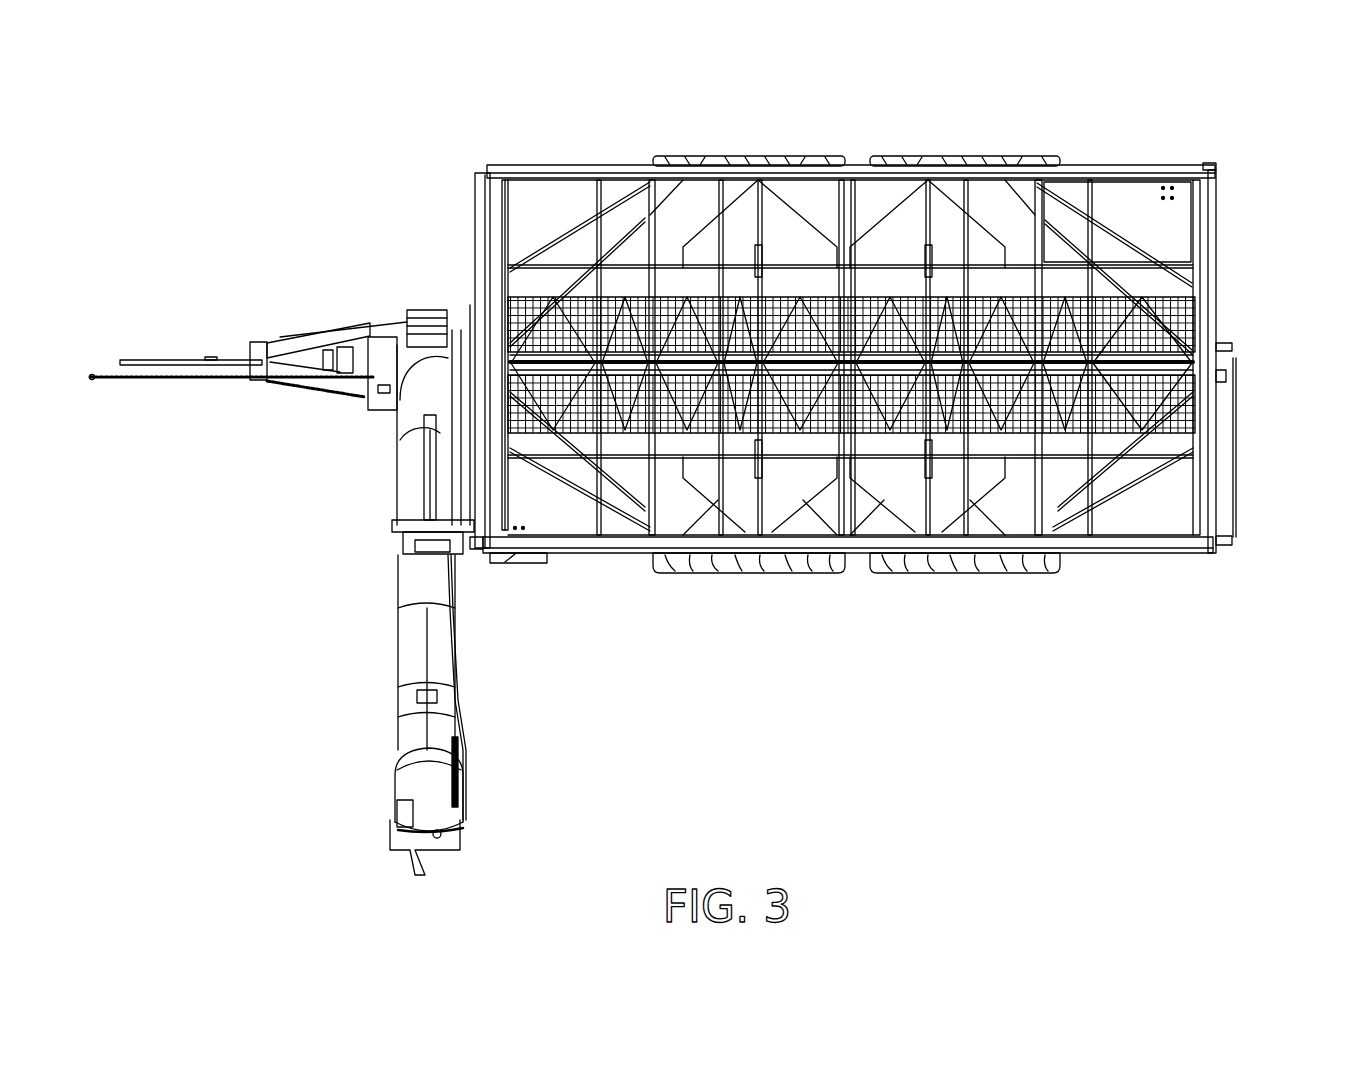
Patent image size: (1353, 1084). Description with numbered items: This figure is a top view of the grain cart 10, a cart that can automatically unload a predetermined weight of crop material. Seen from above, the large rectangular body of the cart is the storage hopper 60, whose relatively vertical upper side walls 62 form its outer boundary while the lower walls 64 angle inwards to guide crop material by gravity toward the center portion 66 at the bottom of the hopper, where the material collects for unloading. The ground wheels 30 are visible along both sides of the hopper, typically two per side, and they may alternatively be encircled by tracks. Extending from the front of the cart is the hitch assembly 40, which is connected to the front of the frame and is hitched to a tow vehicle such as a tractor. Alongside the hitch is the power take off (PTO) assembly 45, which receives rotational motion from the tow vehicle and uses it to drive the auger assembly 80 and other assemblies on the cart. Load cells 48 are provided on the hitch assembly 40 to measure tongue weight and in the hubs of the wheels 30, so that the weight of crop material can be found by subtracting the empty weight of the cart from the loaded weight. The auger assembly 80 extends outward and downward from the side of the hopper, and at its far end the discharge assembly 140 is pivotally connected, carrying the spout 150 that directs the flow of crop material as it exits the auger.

The grain cart 10 is at (1007, 697).
The ground wheels 30 is at (705, 157).
The hitch assembly 40 is at (310, 327).
The power take off (PTO) assembly 45 is at (214, 358).
The load cells 48 is at (748, 156).
The storage hopper 60 is at (1162, 560).
The upper side walls 62 is at (573, 165).
The lower walls 64 is at (1128, 205).
The center portion 66 is at (1185, 302).
The auger assembly 80 is at (368, 703).
The discharge assembly 140 is at (415, 785).
The spout 150 is at (393, 843).